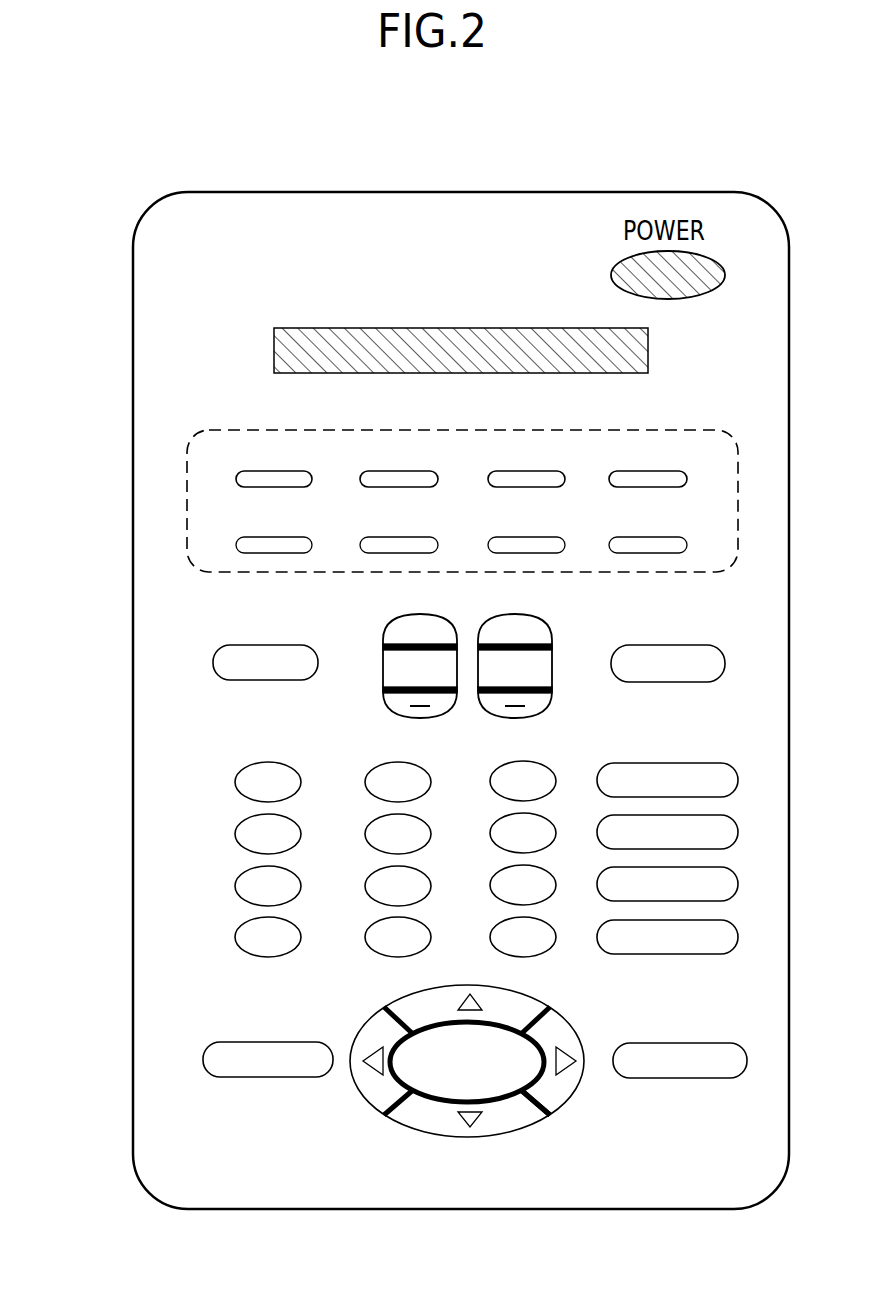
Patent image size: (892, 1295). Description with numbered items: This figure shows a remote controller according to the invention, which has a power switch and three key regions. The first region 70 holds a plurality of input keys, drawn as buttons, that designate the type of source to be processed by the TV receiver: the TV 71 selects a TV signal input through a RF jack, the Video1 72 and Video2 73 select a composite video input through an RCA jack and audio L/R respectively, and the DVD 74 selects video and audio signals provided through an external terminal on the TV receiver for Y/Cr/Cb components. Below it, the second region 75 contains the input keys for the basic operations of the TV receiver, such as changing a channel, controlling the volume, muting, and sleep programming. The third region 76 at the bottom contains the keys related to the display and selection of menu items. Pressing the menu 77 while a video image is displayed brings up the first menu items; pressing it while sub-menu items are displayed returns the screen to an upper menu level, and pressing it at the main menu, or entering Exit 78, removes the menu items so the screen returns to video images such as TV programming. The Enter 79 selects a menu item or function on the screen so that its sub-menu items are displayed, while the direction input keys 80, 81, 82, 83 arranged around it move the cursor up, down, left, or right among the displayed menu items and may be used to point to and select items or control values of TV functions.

The first region 70 is at (407, 482).
The TV key 71 is at (312, 478).
The Video1 key 72 is at (438, 478).
The Video2 key 73 is at (565, 478).
The DVD key 74 is at (687, 478).
The second region 75 is at (190, 623).
The third region 76 is at (192, 1008).
The menu key 77 is at (262, 1077).
The Exit key 78 is at (685, 1078).
The Enter key 79 is at (433, 1100).
The direction input key 80 is at (446, 1005).
The direction input key 81 is at (520, 1103).
The direction input key 82 is at (373, 1093).
The direction input key 83 is at (572, 1035).